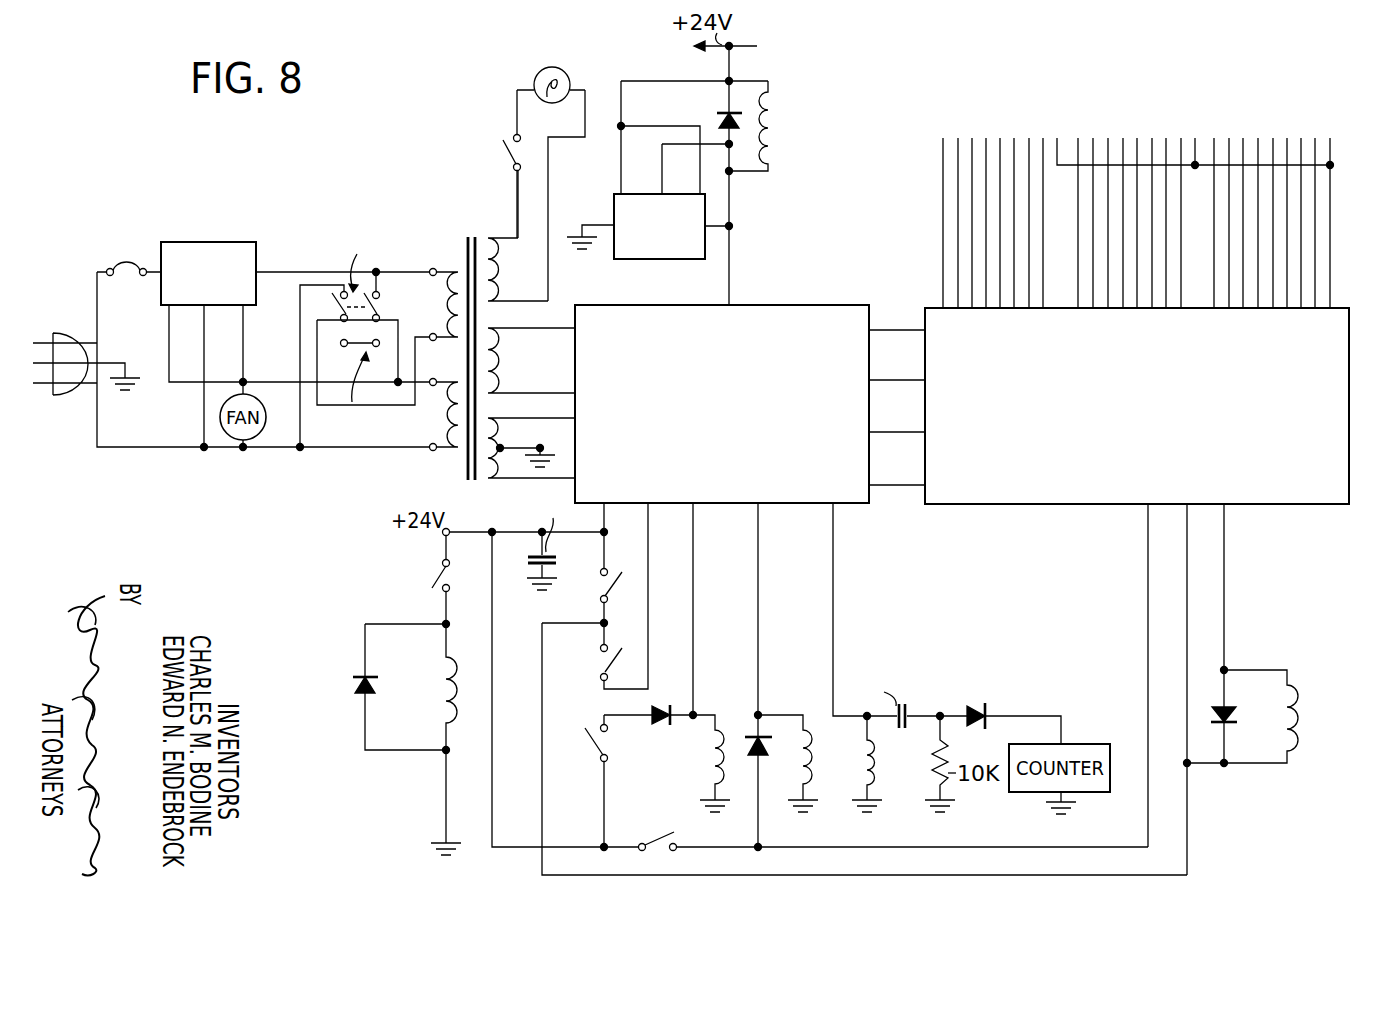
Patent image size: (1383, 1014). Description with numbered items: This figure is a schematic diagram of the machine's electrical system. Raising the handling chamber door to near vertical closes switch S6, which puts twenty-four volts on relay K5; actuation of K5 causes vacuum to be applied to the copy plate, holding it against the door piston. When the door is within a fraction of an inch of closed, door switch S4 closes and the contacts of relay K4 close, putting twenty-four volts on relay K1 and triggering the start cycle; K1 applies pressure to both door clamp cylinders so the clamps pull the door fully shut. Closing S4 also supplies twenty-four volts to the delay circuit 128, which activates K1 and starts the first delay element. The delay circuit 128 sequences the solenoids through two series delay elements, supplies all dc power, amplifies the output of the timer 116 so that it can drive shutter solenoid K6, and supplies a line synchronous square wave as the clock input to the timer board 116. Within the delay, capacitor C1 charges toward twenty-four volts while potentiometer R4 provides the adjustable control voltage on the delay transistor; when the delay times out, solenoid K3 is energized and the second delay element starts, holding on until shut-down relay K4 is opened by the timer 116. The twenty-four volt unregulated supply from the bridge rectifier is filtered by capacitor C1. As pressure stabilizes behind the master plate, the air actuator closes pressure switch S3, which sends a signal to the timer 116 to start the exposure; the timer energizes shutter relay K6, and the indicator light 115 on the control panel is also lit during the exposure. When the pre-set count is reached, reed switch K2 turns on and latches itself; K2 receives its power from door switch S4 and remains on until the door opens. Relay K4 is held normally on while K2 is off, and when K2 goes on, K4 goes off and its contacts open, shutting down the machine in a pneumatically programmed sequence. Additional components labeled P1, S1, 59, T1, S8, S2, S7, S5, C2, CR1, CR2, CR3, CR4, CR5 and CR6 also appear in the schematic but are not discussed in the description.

The power plug P1 is at (55, 333).
The power switch S1 is at (208, 273).
The voltage selector switch 59 is at (381, 313).
The transformer T1 is at (481, 238).
The lamp switch S8 is at (509, 170).
The indicator light 115 is at (546, 70).
The diode CR5 is at (719, 113).
The shutter relay K6 is at (780, 132).
The switch S2 is at (636, 226).
The delay circuit 128 is at (810, 304).
The timer 116 is at (1005, 505).
The thumbwheel switches S7 is at (1137, 171).
The switch S6 is at (438, 574).
The diode CR4 is at (357, 677).
The relay K5 is at (455, 703).
The capacitor C1 is at (540, 566).
The door switch S4 is at (621, 588).
The potentiometer R4 is at (621, 668).
The diode CR1 is at (661, 722).
The door clamp solenoid relay K1 is at (712, 772).
The switch S5 is at (590, 738).
The pressure switch S3 is at (654, 842).
The diode CR2 is at (770, 747).
The solenoid K3 is at (806, 782).
The capacitor C2 is at (906, 701).
The diode CR6 is at (972, 708).
The reed switch K2 is at (872, 748).
The diode CR3 is at (1231, 705).
The shut-down relay K4 is at (1297, 733).